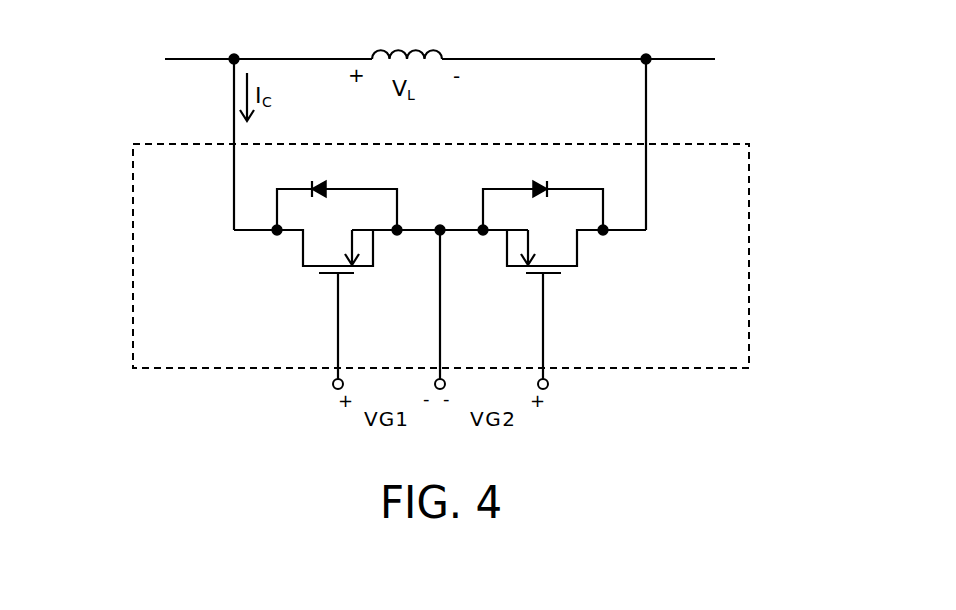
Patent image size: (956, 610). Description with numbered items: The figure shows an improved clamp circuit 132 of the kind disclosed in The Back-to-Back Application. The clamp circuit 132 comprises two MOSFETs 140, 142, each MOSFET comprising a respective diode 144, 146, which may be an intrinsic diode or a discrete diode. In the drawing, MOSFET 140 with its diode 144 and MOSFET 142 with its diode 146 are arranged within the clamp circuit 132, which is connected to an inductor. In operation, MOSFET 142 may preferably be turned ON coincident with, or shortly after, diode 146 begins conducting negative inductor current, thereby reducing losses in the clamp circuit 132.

The clamp circuit 132 is at (740, 151).
The MOSFET 140 is at (303, 258).
The MOSFET 142 is at (577, 258).
The diode 144 is at (326, 187).
The diode 146 is at (548, 187).